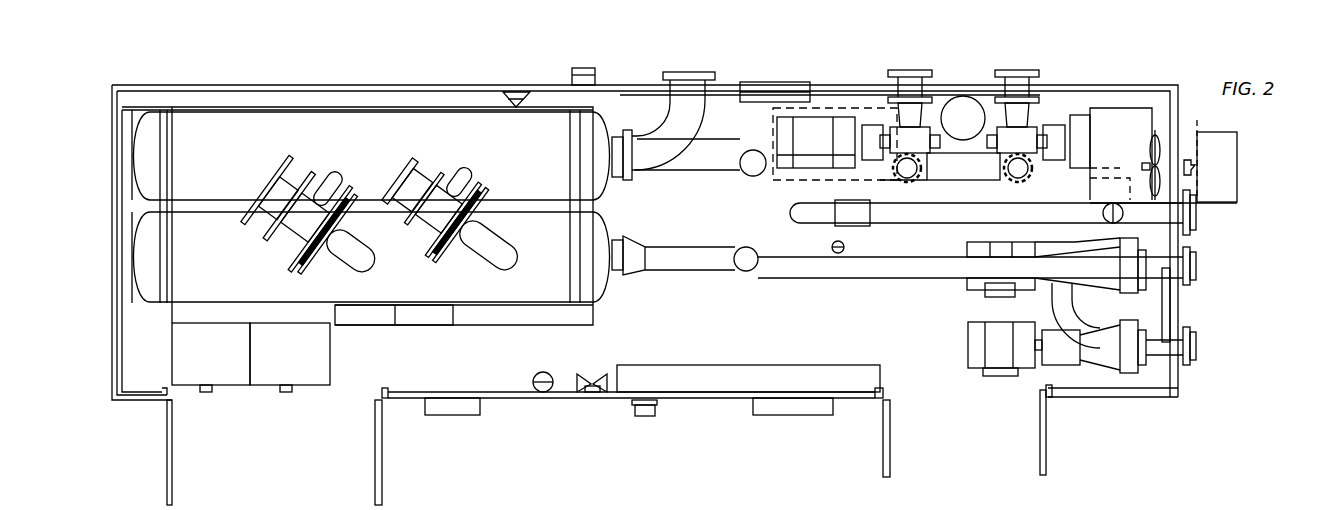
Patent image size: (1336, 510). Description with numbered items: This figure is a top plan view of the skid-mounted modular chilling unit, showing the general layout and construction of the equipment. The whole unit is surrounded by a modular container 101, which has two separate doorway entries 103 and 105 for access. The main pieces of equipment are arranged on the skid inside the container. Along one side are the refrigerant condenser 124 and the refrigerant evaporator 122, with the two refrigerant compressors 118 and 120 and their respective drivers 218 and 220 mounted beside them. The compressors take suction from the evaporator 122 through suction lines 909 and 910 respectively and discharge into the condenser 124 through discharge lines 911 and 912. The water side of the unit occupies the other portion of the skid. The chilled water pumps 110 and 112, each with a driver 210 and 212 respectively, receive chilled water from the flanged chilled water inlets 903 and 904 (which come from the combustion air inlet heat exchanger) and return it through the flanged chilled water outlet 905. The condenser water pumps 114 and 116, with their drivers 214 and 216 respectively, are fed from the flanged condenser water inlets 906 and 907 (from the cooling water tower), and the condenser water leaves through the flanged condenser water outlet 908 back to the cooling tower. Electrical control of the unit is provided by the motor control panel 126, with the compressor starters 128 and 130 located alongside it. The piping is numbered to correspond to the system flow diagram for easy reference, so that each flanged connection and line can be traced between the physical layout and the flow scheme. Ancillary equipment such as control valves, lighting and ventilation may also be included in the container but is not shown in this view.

The modular container 101 is at (128, 85).
The doorway entry 103 is at (293, 447).
The doorway entry 105 is at (983, 429).
The chilled water pump 110 is at (1142, 380).
The chilled water pump 112 is at (1130, 292).
The condenser water pump 114 is at (1030, 128).
The condenser water pump 116 is at (890, 118).
The refrigerant compressor 118 is at (280, 247).
The refrigerant compressor 120 is at (452, 170).
The refrigerant evaporator 122 is at (219, 280).
The refrigerant condenser 124 is at (233, 153).
The motor control panel 126 is at (775, 366).
The compressor starter 128 is at (223, 367).
The compressor starter 130 is at (307, 367).
The driver 210 is at (978, 343).
The driver 212 is at (975, 292).
The driver 214 is at (1122, 138).
The driver 216 is at (775, 142).
The driver 218 is at (244, 218).
The driver 220 is at (428, 164).
The chilled water inlet 903 is at (1198, 345).
The chilled water inlet 904 is at (1198, 272).
The chilled water outlet 905 is at (1198, 217).
The condenser water inlet 906 is at (1012, 70).
The condenser water inlet 907 is at (915, 70).
The condenser water outlet 908 is at (690, 72).
The suction line 909 is at (510, 265).
The suction line 910 is at (376, 270).
The discharge line 911 is at (470, 175).
The discharge line 912 is at (334, 168).